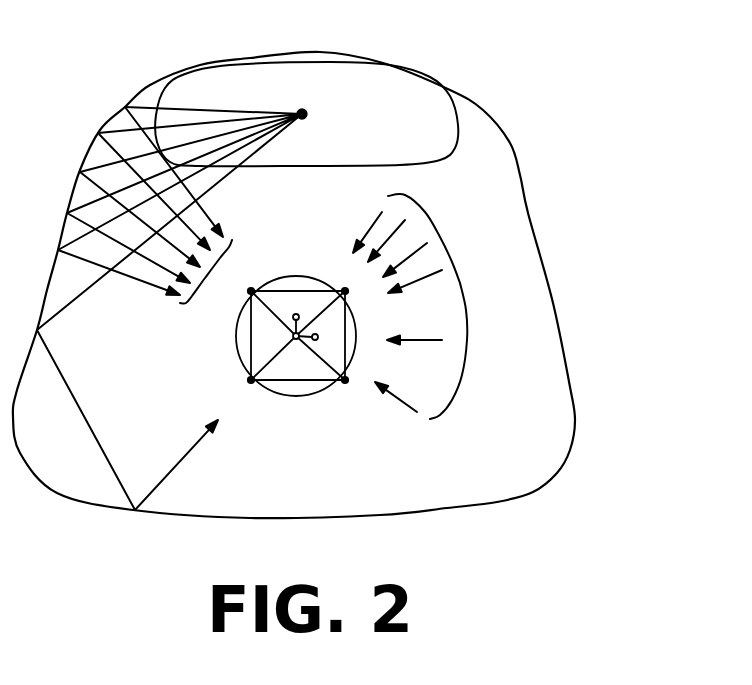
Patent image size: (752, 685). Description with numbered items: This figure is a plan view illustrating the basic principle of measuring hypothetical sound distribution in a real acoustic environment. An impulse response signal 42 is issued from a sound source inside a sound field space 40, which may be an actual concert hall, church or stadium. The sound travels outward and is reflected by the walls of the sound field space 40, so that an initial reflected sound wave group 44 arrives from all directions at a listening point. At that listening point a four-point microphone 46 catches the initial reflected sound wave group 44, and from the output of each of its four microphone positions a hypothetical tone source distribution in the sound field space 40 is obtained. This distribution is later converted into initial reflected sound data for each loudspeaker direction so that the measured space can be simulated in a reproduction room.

The sound field space 40 is at (528, 213).
The impulse response signal 42 is at (284, 110).
The initial reflected sound wave group 44 is at (268, 308).
The four-point microphone 46 is at (306, 300).